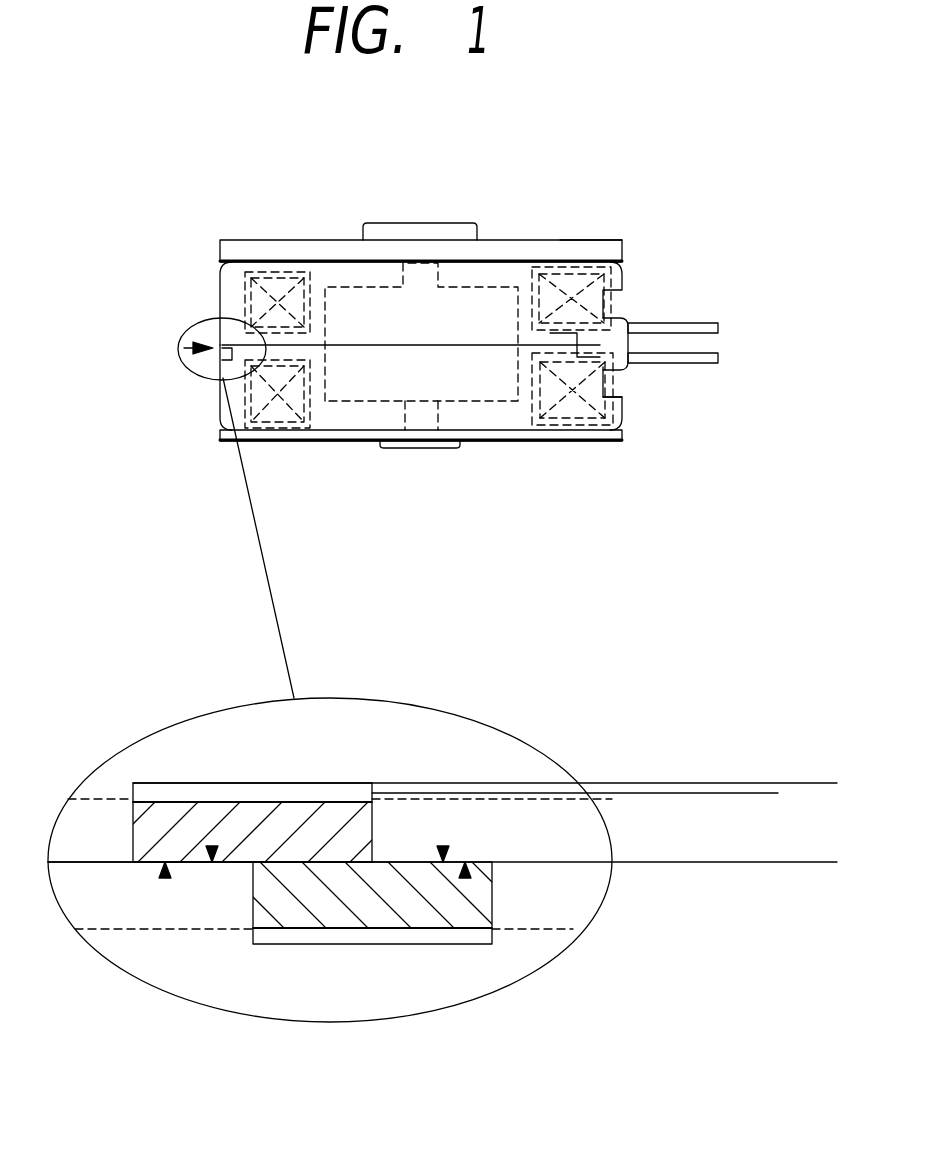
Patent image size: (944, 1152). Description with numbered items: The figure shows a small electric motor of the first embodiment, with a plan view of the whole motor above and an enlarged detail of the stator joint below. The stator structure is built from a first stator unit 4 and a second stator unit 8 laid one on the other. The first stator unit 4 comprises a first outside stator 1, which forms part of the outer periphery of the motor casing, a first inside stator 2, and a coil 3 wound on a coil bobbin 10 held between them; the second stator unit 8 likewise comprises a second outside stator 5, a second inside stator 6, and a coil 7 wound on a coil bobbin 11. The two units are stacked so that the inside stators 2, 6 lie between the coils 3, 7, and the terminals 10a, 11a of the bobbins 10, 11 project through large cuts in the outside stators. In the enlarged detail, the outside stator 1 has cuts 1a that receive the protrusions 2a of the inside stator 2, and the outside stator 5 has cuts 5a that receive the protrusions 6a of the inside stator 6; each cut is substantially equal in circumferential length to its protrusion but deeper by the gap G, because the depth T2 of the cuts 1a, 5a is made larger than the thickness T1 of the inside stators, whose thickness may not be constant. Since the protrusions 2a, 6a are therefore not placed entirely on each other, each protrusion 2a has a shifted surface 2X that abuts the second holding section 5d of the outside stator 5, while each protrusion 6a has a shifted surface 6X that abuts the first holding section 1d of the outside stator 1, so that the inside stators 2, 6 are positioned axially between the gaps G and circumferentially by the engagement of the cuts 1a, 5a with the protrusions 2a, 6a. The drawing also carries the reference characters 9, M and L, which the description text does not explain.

The first outside stator 1 is at (513, 270).
The first inside stator 2 is at (612, 318).
The coil 3 is at (605, 250).
The first stator unit 4 is at (757, 125).
The second outside stator 5 is at (520, 415).
The second inside stator 6 is at (622, 366).
The coil 7 is at (622, 407).
The second stator unit 8 is at (757, 363).
The armature 9 is at (451, 300).
The coil bobbin 10 is at (267, 268).
The coil bobbin 11 is at (512, 400).
The terminal 10a is at (630, 323).
The terminal 11a is at (630, 355).
The cuts 1a is at (277, 783).
The protrusions 2a is at (335, 812).
The second holding section 5d is at (212, 848).
The shifted surface 6X is at (443, 848).
The shifted surface 2X is at (165, 880).
The first holding section 1d is at (466, 880).
The cuts 5a is at (372, 947).
The protrusions 6a is at (433, 913).
The gap G is at (232, 783).
The mating plane M is at (300, 940).
The reference line L is at (90, 862).
The thickness T1 is at (765, 793).
The depth T2 is at (828, 783).